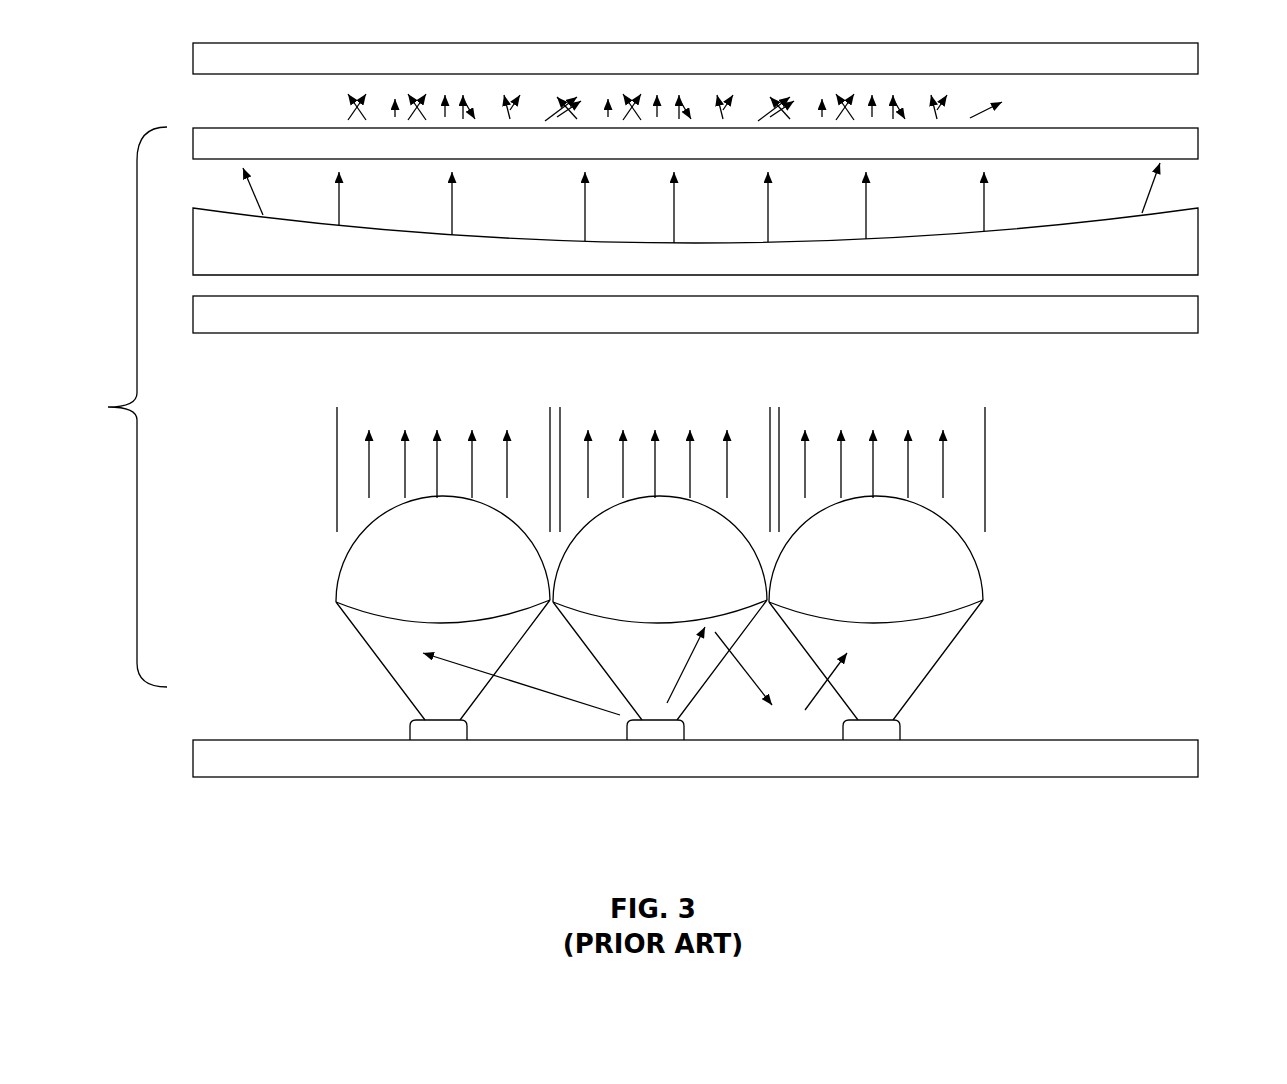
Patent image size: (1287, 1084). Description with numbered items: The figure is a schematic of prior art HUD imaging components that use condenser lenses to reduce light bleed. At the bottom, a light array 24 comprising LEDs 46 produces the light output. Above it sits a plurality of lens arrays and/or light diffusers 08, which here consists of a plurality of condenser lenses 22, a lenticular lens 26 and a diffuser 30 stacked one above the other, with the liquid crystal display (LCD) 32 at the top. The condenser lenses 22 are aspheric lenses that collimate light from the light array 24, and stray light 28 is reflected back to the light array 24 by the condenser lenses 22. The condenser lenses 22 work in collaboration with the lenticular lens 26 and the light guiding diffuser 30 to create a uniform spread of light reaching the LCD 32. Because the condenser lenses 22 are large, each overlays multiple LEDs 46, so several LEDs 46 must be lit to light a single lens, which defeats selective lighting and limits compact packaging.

The plurality of lens arrays and/or light diffusers 08 is at (117, 407).
The condenser lens 22 is at (400, 580).
The light array 24 is at (1190, 757).
The lenticular lens 26 is at (1193, 242).
The stray light 28 is at (755, 683).
The diffuser 30 is at (1193, 143).
The liquid crystal display (LCD) 32 is at (1193, 55).
The LEDs 46 is at (653, 745).